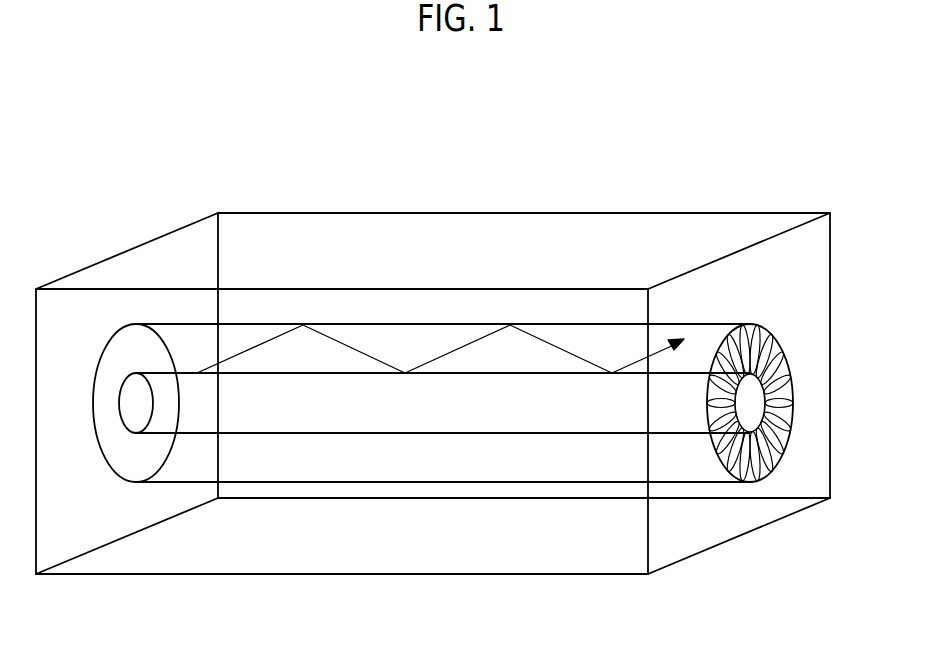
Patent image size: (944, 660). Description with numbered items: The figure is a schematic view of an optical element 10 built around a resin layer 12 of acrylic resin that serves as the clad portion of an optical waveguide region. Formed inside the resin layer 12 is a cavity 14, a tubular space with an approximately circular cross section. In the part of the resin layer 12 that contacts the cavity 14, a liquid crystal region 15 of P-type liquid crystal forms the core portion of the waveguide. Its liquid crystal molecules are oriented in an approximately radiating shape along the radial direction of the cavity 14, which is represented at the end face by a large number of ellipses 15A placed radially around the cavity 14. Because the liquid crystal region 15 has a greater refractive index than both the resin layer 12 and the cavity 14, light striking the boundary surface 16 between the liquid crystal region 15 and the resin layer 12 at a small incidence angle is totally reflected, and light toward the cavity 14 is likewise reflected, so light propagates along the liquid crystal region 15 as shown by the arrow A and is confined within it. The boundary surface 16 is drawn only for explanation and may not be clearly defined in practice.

The optical element 10 is at (466, 379).
The resin layer 12 is at (398, 248).
The cavity 14 is at (265, 403).
The liquid crystal region 15 is at (421, 484).
The ellipses 15A is at (762, 355).
The boundary surface 16 is at (506, 490).
The arrow A is at (197, 373).